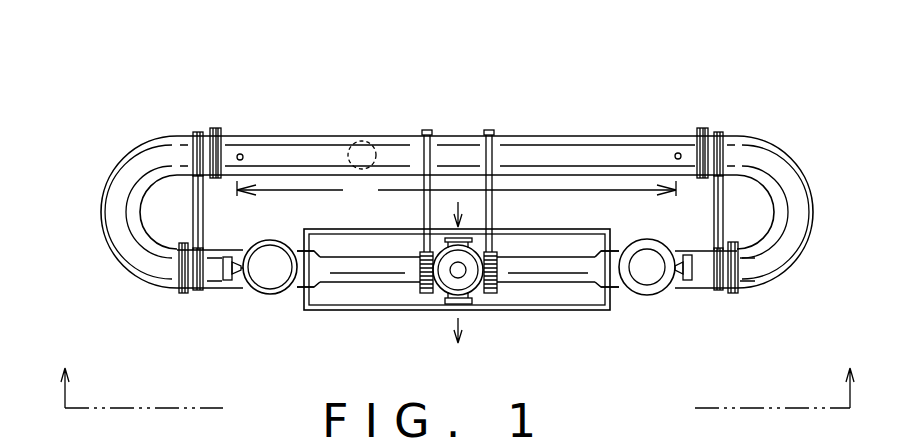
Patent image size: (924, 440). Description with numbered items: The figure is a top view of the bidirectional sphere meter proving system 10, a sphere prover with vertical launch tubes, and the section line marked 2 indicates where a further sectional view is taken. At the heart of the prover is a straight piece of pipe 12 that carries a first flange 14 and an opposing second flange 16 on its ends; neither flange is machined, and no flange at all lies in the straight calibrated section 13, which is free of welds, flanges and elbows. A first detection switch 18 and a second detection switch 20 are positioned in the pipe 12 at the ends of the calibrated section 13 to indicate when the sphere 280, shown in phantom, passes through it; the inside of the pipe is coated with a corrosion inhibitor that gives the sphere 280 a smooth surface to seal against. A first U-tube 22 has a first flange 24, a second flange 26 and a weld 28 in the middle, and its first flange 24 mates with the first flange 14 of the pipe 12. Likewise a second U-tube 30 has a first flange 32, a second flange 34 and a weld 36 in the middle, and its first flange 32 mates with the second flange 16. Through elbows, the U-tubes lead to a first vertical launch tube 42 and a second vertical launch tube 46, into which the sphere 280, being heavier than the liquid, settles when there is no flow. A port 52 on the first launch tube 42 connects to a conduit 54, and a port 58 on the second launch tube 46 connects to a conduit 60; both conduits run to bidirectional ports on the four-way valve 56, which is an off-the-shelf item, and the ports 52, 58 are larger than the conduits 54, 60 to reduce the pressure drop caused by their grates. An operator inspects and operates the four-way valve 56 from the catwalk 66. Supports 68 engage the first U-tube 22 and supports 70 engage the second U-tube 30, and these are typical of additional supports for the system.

The bidirectional sphere meter proving system 10 is at (798, 100).
The straight piece of pipe 12 is at (565, 152).
The straight calibrated section 13 is at (456, 189).
The first flange 14 is at (700, 130).
The second flange 16 is at (220, 133).
The first detection switch 18 is at (675, 153).
The second detection switch 20 is at (244, 155).
The first U-tube 22 is at (813, 187).
The first flange 24 is at (724, 136).
The second flange 26 is at (740, 285).
The weld 28 is at (778, 213).
The sphere 280 is at (372, 145).
The second U-tube 30 is at (110, 178).
The first flange 32 is at (197, 132).
The second flange 34 is at (173, 274).
The weld 36 is at (123, 213).
The first vertical launch tube 42 is at (666, 295).
The second vertical launch tube 46 is at (257, 294).
The port 52 is at (615, 284).
The conduit 54 is at (543, 284).
The 4-way valve 56 is at (442, 294).
The port 58 is at (298, 292).
The conduit 60 is at (373, 284).
The catwalk 66 is at (527, 230).
The supports 68 is at (725, 202).
The supports 70 is at (193, 188).
The section line 2- 2 is at (457, 372).